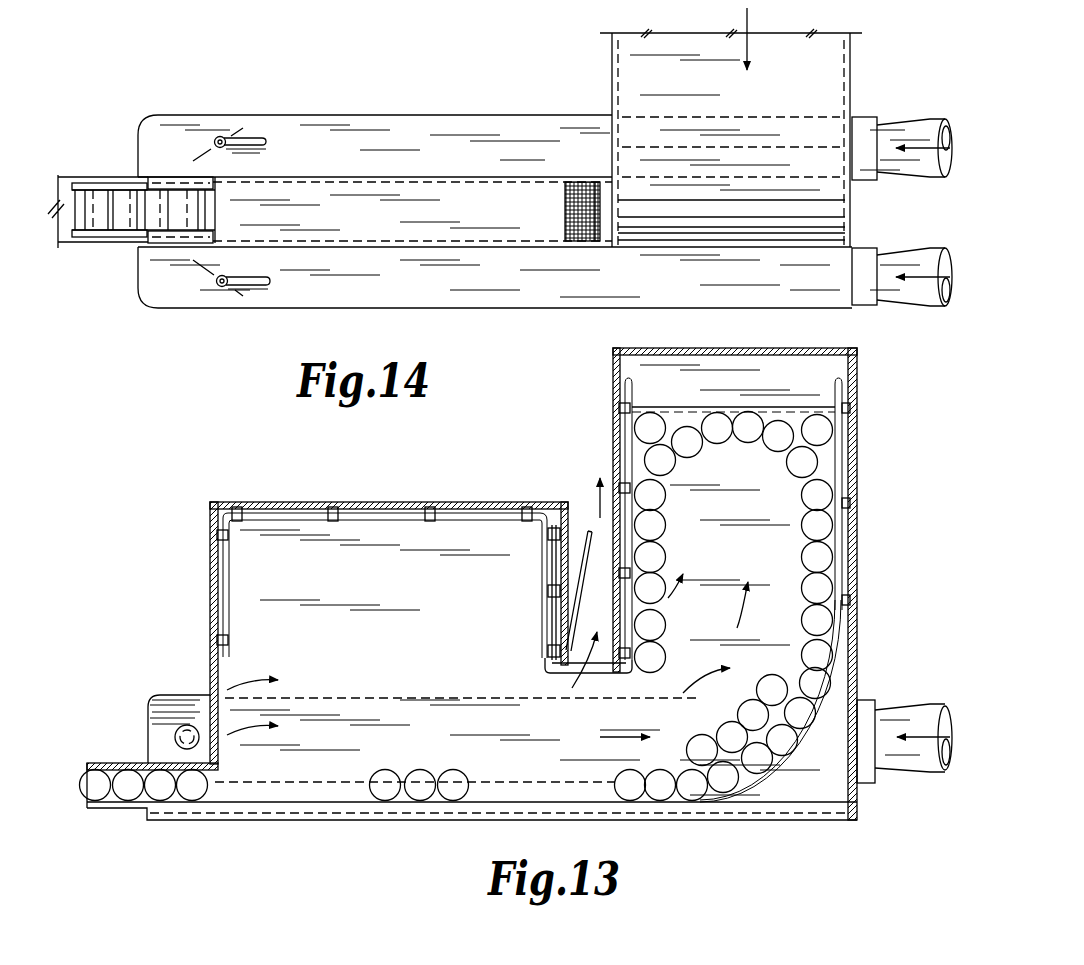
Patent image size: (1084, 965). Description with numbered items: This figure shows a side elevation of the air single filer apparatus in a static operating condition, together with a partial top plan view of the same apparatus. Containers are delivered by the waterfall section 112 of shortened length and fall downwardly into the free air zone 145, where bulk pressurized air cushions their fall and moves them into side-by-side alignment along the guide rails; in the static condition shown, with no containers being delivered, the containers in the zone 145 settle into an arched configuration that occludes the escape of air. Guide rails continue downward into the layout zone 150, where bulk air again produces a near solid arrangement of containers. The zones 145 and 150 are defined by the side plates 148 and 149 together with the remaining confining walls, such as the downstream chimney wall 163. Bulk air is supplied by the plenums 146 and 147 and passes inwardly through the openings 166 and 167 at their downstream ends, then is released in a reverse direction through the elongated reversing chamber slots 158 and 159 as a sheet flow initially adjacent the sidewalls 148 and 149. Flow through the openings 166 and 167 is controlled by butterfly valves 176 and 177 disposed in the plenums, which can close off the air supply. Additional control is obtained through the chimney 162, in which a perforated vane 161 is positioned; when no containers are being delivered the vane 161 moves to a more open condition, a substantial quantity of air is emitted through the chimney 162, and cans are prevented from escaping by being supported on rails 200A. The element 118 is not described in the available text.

In FIG. 14, the waterfall section 112 is at (733, 102).
In FIG. 13, the waterfall section 112 is at (822, 368).
In FIG. 14, the tank wall 118 is at (853, 103).
In FIG. 13, the free air zone 145 is at (757, 569).
In FIG. 14, the plenum 146 is at (507, 133).
In FIG. 13, the plenum 146 is at (871, 700).
In FIG. 14, the plenum 147 is at (489, 297).
In FIG. 14, the side plate 148 is at (385, 176).
In FIG. 14, the side plate 149 is at (403, 248).
In FIG. 13, the layout zone 150 is at (409, 674).
In FIG. 14, the elongated reversing chamber slot 158 is at (218, 184).
In FIG. 13, the elongated reversing chamber slot 158 is at (205, 703).
In FIG. 14, the elongated reversing chamber slot 159 is at (218, 240).
In FIG. 14, the vane 161 is at (565, 200).
In FIG. 13, the vane 161 is at (556, 600).
In FIG. 13, the chimney 162 is at (593, 514).
In FIG. 13, the downstream chimney wall 163 is at (548, 570).
In FIG. 14, the opening 166 is at (178, 176).
In FIG. 13, the opening 166 is at (180, 728).
In FIG. 14, the opening 167 is at (175, 247).
In FIG. 14, the butterfly valve 176 is at (250, 138).
In FIG. 14, the butterfly valve 177 is at (257, 288).
In FIG. 13, the rails 200A is at (595, 662).